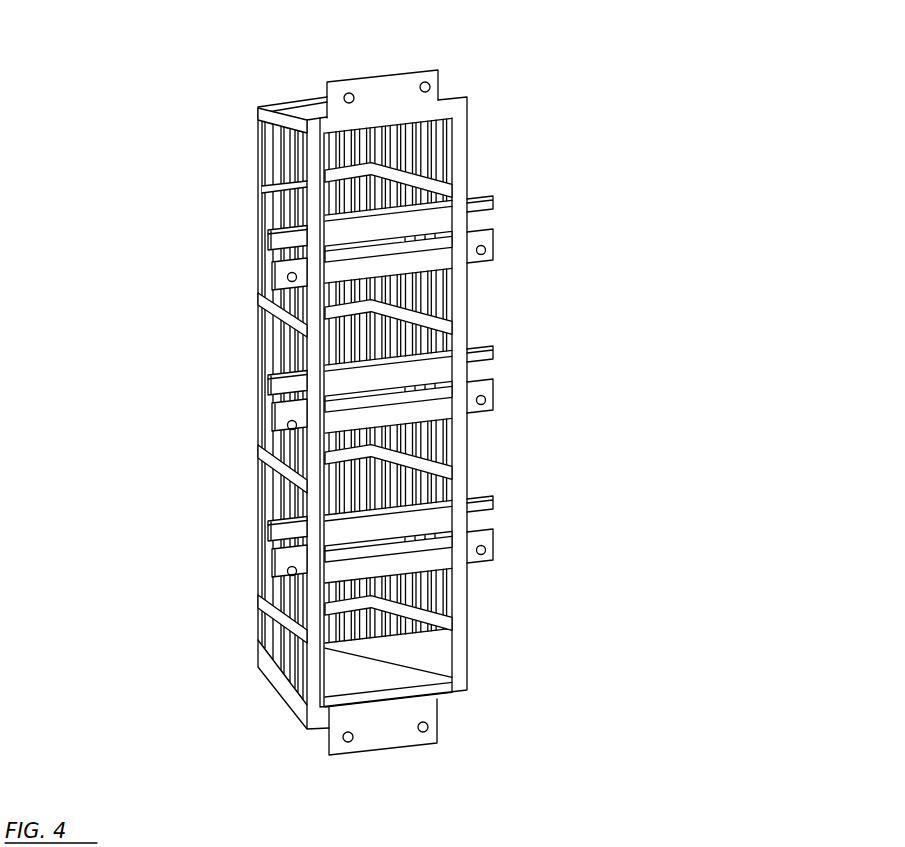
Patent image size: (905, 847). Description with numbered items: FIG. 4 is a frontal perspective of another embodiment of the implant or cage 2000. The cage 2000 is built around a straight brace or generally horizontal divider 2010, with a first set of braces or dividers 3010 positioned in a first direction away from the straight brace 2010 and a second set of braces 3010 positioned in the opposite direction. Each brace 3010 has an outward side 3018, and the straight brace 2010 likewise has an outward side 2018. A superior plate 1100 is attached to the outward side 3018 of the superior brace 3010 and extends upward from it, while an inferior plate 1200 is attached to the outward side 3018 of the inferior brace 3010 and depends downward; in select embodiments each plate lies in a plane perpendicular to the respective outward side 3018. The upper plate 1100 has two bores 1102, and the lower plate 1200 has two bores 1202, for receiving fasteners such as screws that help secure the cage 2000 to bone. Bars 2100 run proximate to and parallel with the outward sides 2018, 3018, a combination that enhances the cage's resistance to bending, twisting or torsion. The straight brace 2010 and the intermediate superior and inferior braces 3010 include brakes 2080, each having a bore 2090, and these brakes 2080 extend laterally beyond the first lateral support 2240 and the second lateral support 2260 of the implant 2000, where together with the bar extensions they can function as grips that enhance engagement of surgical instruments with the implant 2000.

The cage 2000 is at (675, 136).
The superior plate 1100 is at (440, 59).
The bores 1102 is at (408, 71).
The inferior plate 1200 is at (442, 749).
The bores 1202 is at (407, 748).
The braces or dividers 3010 is at (266, 110).
The outward side 3018 is at (438, 107).
The first lateral support 2240 is at (438, 176).
The outward side 2018 is at (388, 562).
The bar 2100 is at (508, 205).
The straight brace or generally horizontal divider 2010 is at (499, 521).
The brakes 2080 is at (285, 272).
The bore 2090 is at (257, 286).
The second lateral support 2260 is at (280, 475).